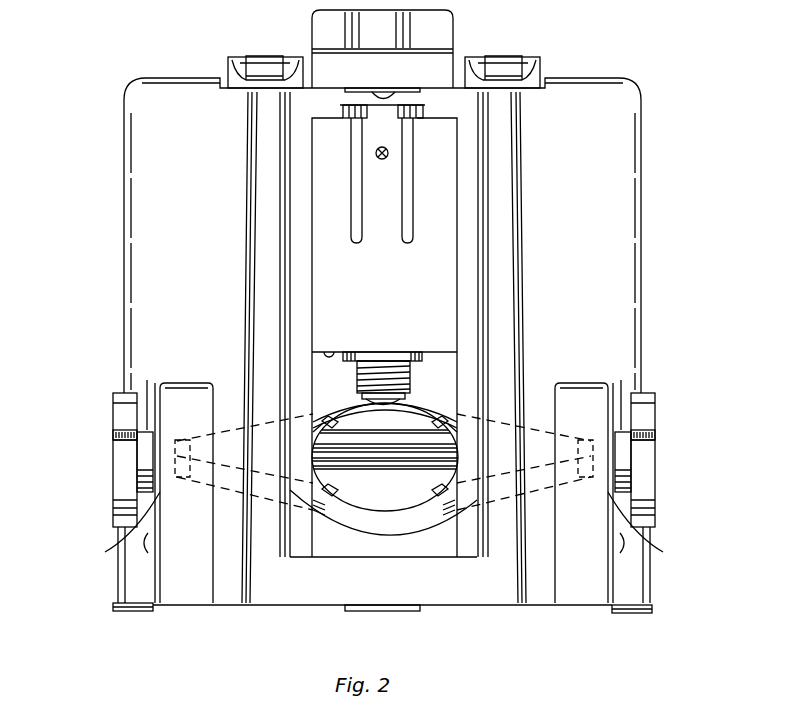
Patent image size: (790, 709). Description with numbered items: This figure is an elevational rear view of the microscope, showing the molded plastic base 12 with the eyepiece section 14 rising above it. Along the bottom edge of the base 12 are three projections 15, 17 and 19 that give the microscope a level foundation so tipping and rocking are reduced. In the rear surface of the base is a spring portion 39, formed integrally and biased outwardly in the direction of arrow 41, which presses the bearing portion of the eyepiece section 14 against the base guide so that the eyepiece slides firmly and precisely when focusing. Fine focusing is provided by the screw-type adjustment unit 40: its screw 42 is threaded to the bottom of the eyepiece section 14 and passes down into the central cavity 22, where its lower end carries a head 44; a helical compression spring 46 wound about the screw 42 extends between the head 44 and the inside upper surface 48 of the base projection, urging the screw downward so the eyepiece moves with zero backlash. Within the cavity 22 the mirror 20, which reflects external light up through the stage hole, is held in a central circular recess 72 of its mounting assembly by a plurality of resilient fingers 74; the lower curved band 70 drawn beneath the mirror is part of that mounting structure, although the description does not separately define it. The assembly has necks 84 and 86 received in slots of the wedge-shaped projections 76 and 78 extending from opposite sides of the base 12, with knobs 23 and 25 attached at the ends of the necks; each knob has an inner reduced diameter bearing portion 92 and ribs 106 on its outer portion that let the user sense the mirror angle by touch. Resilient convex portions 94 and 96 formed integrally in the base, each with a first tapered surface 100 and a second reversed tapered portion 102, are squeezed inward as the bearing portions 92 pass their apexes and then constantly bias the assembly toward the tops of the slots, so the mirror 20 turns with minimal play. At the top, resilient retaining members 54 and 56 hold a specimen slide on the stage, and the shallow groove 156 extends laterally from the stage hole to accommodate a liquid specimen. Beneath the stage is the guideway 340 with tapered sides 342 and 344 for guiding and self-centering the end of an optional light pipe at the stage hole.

The base 12 is at (653, 232).
The eyepiece section 14 is at (465, 22).
The projection 15 is at (130, 612).
The projection 17 is at (385, 607).
The projection 19 is at (632, 613).
The mirror 20 is at (400, 499).
The central cavity 22 is at (447, 363).
The knob 23 is at (104, 477).
The knob 25 is at (666, 472).
The spring portion 39 is at (380, 193).
The screw-type adjustment unit 40 is at (396, 338).
The arrow 41 is at (389, 151).
The screw 42 is at (366, 352).
The head 44 is at (406, 396).
The helical compression spring 46 is at (413, 357).
The inside upper surface 48 is at (328, 350).
The resilient retaining member 54 is at (237, 56).
The resilient retaining member 56 is at (530, 57).
The lower band 70 is at (341, 530).
The central circular recess 72 is at (348, 414).
The resilient fingers 74 is at (423, 498).
The wedge-shaped projection 76 is at (187, 598).
The wedge-shaped projection 78 is at (585, 598).
The neck 84 is at (171, 440).
The neck 86 is at (596, 440).
The bearing portion 92 is at (382, 393).
The resilient convex portion 94 is at (114, 530).
The resilient convex portion 96 is at (649, 529).
The first tapered surface 100 is at (153, 483).
The second reversed tapered portion 102 is at (148, 541).
The ribs 106 is at (113, 436).
The shallow groove 156 is at (395, 72).
The guideway 340 is at (376, 115).
The tapered side 342 is at (342, 116).
The tapered side 344 is at (423, 111).